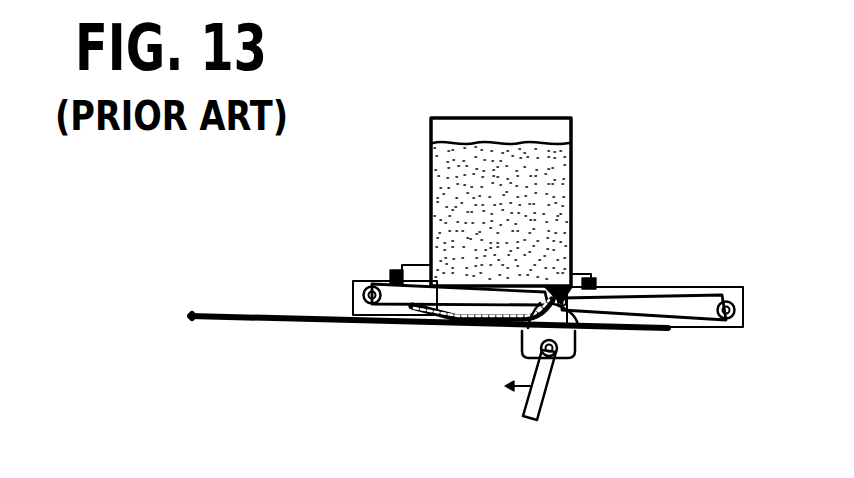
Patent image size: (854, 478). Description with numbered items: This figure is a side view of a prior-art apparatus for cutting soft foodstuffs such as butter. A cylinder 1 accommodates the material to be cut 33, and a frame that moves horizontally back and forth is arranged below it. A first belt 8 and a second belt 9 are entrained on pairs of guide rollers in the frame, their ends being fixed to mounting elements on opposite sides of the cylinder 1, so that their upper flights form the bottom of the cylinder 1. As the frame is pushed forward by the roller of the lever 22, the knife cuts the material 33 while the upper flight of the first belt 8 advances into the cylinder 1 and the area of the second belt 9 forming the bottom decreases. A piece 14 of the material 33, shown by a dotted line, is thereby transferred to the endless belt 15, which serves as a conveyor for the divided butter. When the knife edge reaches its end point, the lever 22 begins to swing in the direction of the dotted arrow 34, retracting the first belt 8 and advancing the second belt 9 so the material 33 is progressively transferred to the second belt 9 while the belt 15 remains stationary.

The cylinder 1 is at (575, 121).
The material to be cut 33 is at (522, 160).
The first belt 8 is at (412, 316).
The second belt 9 is at (683, 293).
The endless belt 15 is at (255, 320).
The piece of material 14 is at (572, 334).
The dotted arrow 34 is at (556, 393).
The lever 22 is at (530, 408).